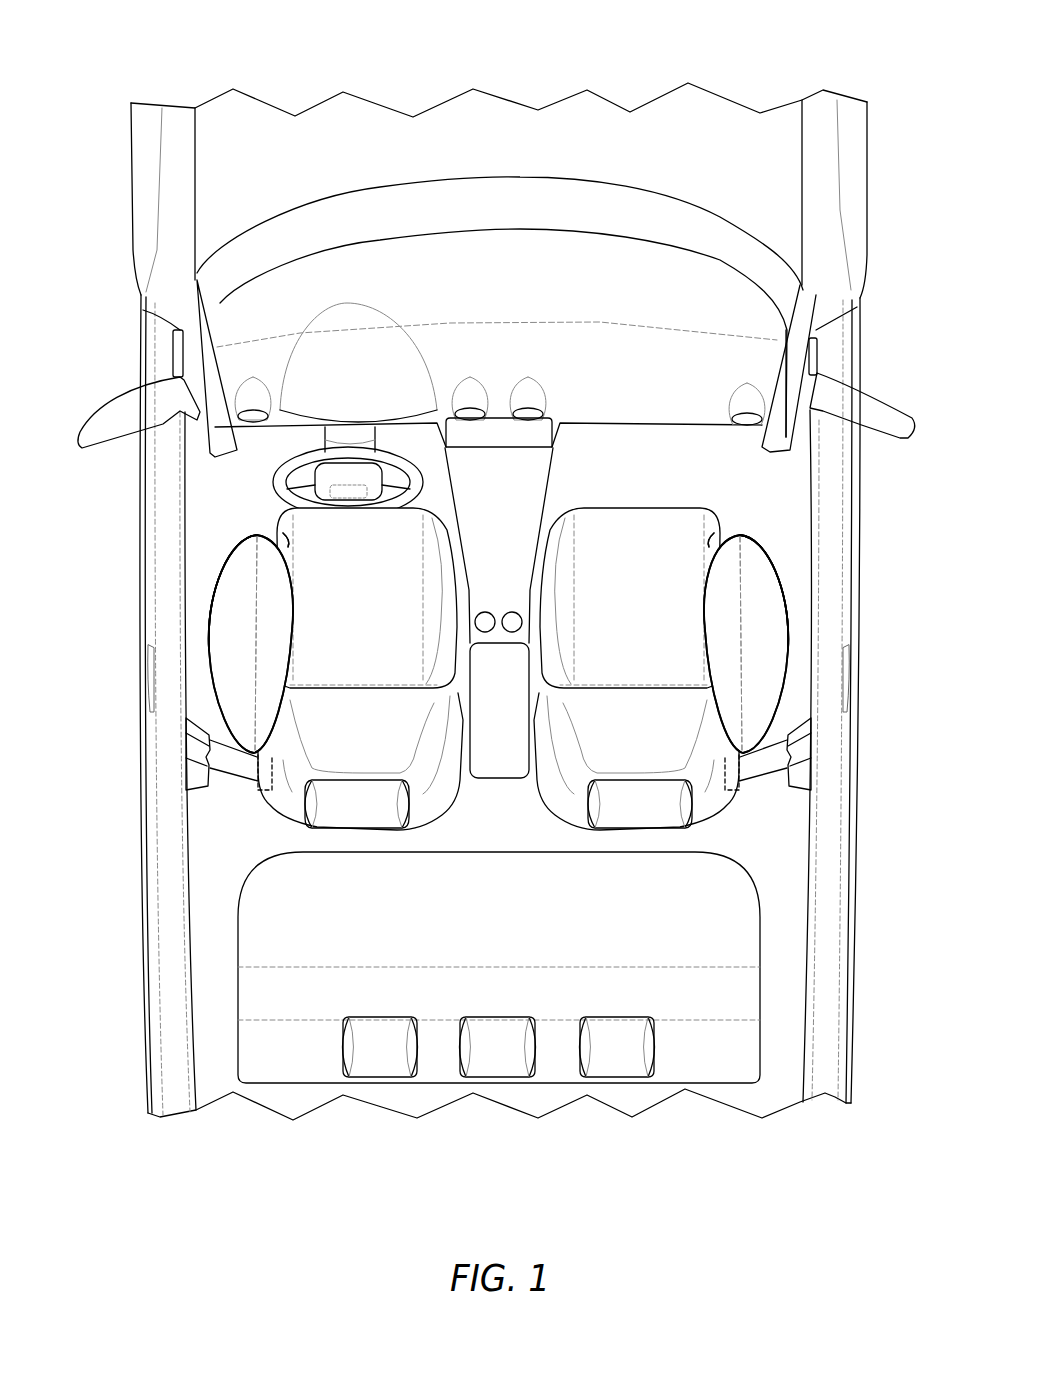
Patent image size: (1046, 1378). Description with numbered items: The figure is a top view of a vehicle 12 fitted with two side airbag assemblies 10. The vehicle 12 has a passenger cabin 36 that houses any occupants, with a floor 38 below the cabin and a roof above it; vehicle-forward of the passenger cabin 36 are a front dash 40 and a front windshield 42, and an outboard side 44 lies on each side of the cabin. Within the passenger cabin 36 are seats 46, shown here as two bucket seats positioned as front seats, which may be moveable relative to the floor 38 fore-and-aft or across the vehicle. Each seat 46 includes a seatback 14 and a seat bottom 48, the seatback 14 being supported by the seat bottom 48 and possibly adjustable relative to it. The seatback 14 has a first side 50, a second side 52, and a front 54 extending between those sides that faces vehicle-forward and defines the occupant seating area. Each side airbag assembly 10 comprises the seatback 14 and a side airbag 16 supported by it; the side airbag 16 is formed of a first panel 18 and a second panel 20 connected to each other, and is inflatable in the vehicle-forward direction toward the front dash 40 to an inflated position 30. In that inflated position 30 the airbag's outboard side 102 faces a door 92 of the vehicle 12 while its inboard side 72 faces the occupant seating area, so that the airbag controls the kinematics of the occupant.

The side airbag assembly 10 is at (204, 651).
The vehicle 12 is at (717, 93).
The seatback 14 is at (262, 805).
The side airbag 16 is at (237, 620).
The first panel 18 is at (213, 573).
The second panel 20 is at (286, 537).
The inflated position 30 is at (237, 620).
The passenger cabin 36 is at (500, 834).
The floor 38 is at (692, 453).
The front dash 40 is at (733, 313).
The front windshield 42 is at (710, 233).
The outboard side 44 is at (140, 908).
The seat 46 is at (547, 563).
The seat bottom 48 is at (362, 555).
The first side 50 is at (195, 755).
The second side 52 is at (462, 825).
The front 54 is at (362, 745).
The inboard side 72 is at (286, 537).
The door 92 is at (138, 677).
The outboard side 102 is at (213, 573).